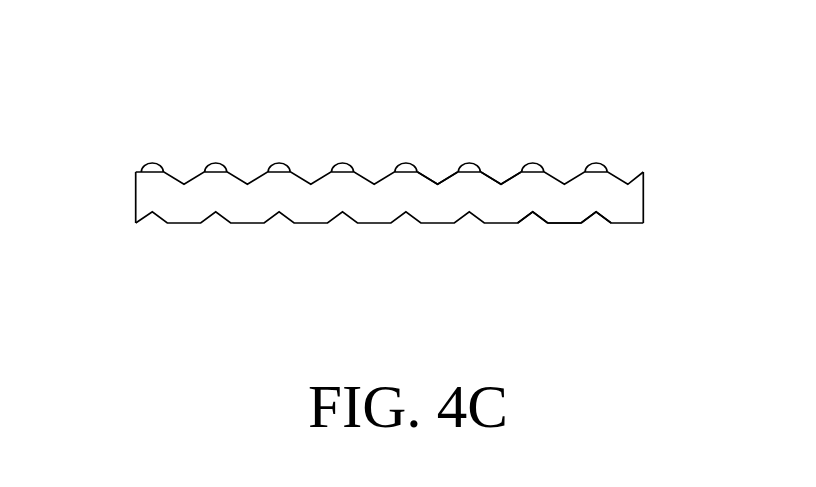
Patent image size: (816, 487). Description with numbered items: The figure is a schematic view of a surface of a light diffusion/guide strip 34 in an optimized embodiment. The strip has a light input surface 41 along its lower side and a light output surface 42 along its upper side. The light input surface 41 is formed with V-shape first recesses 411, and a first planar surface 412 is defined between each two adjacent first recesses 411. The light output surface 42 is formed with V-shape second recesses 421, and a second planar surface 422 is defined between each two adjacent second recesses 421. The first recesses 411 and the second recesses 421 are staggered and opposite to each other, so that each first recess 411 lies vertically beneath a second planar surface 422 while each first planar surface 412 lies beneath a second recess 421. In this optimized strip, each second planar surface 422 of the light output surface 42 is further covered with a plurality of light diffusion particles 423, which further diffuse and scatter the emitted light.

The light diffusion/guide strip 34 is at (622, 130).
The light input surface 41 is at (643, 223).
The first recesses 411 is at (534, 216).
The first planar surface 412 is at (570, 223).
The light output surface 42 is at (136, 172).
The second recesses 421 is at (440, 182).
The second planar surface 422 is at (466, 166).
The light diffusion particles 423 is at (282, 165).